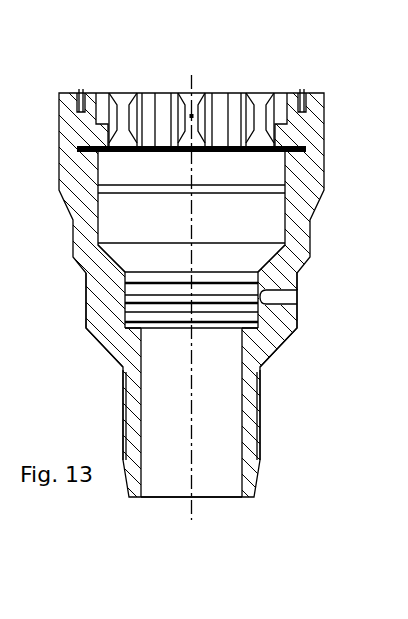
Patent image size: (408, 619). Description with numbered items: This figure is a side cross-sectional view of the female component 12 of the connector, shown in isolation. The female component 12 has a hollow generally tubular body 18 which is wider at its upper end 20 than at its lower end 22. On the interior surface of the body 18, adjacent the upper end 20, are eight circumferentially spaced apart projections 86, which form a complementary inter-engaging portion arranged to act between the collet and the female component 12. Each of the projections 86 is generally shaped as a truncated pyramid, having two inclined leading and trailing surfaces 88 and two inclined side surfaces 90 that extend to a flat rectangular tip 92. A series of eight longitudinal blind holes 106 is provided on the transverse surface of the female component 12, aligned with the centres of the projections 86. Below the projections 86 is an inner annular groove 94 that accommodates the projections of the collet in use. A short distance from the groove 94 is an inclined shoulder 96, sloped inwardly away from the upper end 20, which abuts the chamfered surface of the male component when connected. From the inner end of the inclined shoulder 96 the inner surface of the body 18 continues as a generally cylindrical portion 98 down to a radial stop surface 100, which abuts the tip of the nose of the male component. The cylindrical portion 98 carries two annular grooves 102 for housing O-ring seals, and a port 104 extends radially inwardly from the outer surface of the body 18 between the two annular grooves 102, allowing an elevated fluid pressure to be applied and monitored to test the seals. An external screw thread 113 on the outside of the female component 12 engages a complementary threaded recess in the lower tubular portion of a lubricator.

The female component 12 is at (281, 468).
The hollow generally tubular body 18 is at (130, 418).
The upper end 20 is at (188, 90).
The lower end 22 is at (153, 502).
The projections 86 is at (261, 92).
The inclined leading and trailing surfaces 88 is at (125, 94).
The inclined side surfaces 90 is at (268, 117).
The flat rectangular tip 92 is at (128, 120).
The inner annular groove 94 is at (108, 184).
The inclined shoulder 96 is at (117, 250).
The cylindrical portion 98 is at (125, 292).
The radial stop surface 100 is at (133, 330).
The annular grooves 102 is at (266, 268).
The port 104 is at (280, 297).
The longitudinal blind holes 106 is at (78, 91).
The external screw thread 113 is at (262, 420).